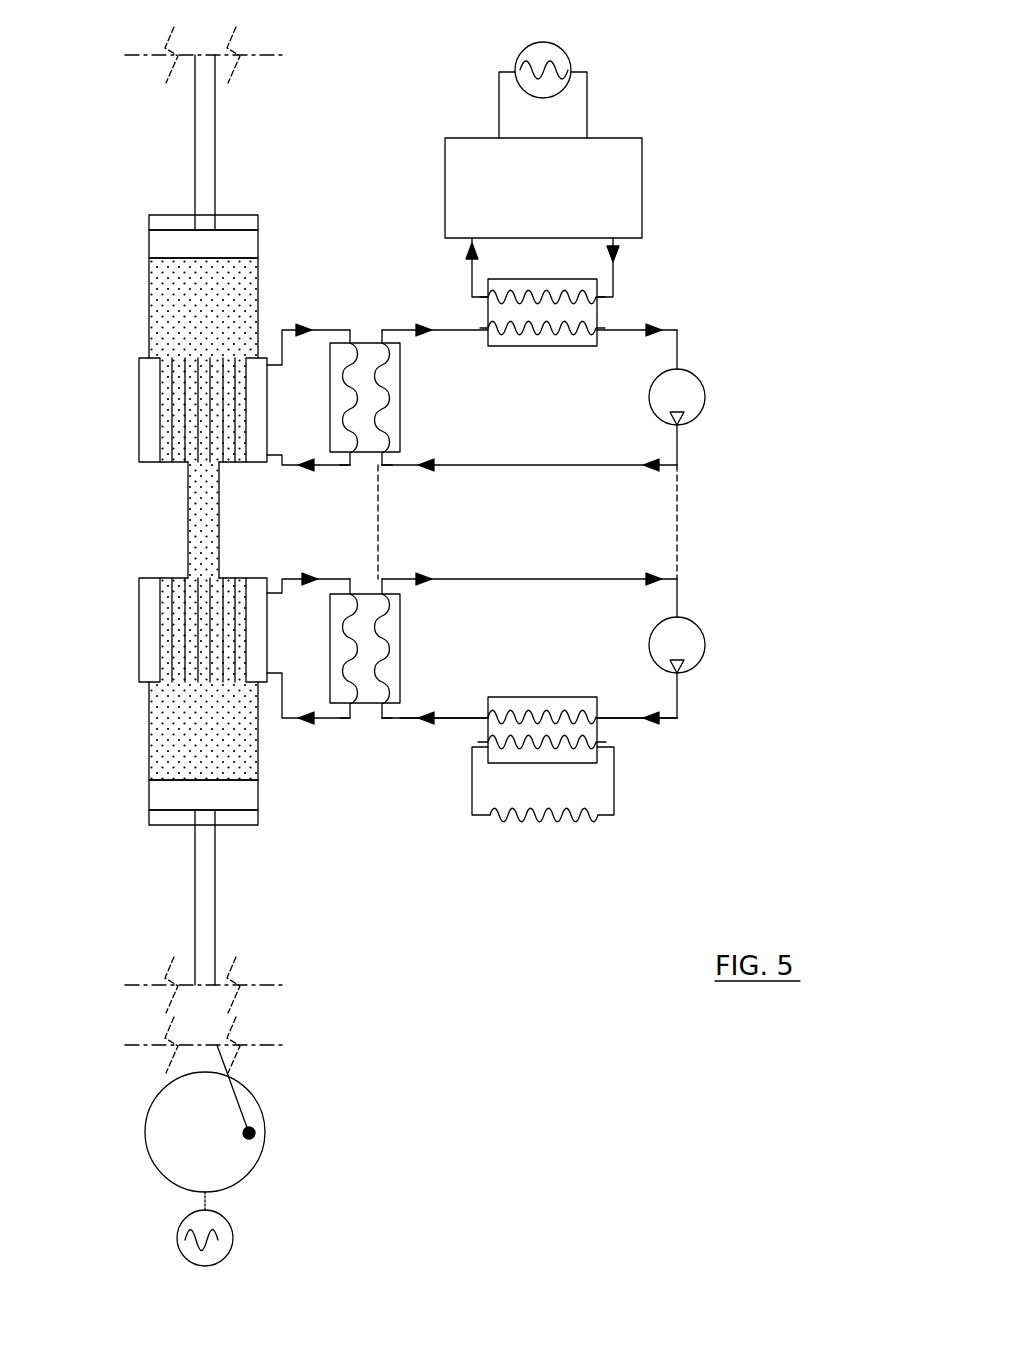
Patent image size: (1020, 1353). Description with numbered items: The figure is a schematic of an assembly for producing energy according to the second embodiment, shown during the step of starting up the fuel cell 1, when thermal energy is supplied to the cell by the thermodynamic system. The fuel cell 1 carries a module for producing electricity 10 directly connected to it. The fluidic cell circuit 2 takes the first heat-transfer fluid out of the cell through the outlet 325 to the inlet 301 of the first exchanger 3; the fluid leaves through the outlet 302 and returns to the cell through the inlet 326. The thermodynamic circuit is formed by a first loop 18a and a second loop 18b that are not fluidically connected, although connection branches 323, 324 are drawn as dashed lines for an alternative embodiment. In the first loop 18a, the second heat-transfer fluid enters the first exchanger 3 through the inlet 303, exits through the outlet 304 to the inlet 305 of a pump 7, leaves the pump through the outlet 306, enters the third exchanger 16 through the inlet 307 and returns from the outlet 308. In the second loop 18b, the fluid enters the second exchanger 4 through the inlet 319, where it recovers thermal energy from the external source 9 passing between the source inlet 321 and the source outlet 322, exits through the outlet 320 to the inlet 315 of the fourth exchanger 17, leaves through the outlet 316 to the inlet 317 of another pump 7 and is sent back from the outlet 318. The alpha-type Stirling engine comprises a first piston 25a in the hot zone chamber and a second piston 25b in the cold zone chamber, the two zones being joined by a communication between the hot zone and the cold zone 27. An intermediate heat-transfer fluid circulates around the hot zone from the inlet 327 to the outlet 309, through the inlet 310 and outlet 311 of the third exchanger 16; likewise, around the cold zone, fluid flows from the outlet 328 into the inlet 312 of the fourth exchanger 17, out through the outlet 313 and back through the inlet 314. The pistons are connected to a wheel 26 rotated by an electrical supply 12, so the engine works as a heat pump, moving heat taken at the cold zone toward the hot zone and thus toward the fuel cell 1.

The fuel cell 1 is at (445, 158).
The fluidic cell circuit 2 is at (612, 281).
The first exchanger 3 is at (538, 280).
The second exchanger 4 is at (501, 697).
The pump 7 is at (649, 393).
The source 9 is at (612, 763).
The module for producing electricity 10 is at (517, 61).
The electrical supply 12 is at (182, 1237).
The third exchanger 16 is at (331, 420).
The fourth exchanger 17 is at (331, 675).
The first loop 18a is at (705, 306).
The second loop 18b is at (707, 560).
The piston 25a is at (162, 245).
The piston 25b is at (162, 792).
The wheel 26 is at (152, 1139).
The communication between the hot zone and the cold zone 27 is at (183, 531).
The first heat-transfer fluid inlet in the first exchanger 301 is at (600, 332).
The first heat-transfer fluid outlet of the first exchanger 302 is at (486, 301).
The second heat-transfer fluid inlet in the first exchanger 303 is at (486, 333).
The second heat-transfer fluid outlet of the first exchanger 304 is at (600, 301).
The second heat-transfer fluid inlet in the pump 305 is at (681, 369).
The second heat-transfer fluid outlet of the pump 306 is at (681, 426).
The second heat-transfer fluid inlet in the third exchanger 307 is at (387, 455).
The second heat-transfer fluid outlet of the third exchanger 308 is at (385, 342).
The working fluid outlet of the Stirling engine 309 is at (274, 352).
The working fluid inlet in the third exchanger 310 is at (348, 342).
The working fluid outlet of the third exchanger 311 is at (346, 455).
The working fluid inlet in the fourth exchanger 312 is at (341, 594).
The working fluid outlet of the fourth exchanger 313 is at (346, 707).
The working fluid inlet of the Stirling engine 314 is at (273, 688).
The second heat-transfer fluid inlet in the fourth exchanger 315 is at (385, 707).
The second heat-transfer fluid outlet of the fourth exchanger 316 is at (385, 594).
The second heat-transfer fluid inlet in the pump 317 is at (681, 617).
The second heat-transfer fluid outlet of the pump 318 is at (681, 675).
The second heat-transfer fluid inlet in the second exchanger 319 is at (601, 714).
The second heat-transfer fluid outlet of the second exchanger 320 is at (486, 714).
The source inlet in the second exchanger 321 is at (486, 740).
The source outlet of the second exchanger 322 is at (601, 740).
The connection branch 323 is at (383, 515).
The connection branch 324 is at (674, 515).
The outlet of the first heat-transfer fluid of the cell 325 is at (622, 241).
The inlet of the first heat-transfer fluid in the cell 326 is at (468, 241).
The intermediate heat-transfer fluid inlet around the hot zone 327 is at (272, 465).
The intermediate heat-transfer fluid outlet of the cold zone 328 is at (272, 582).